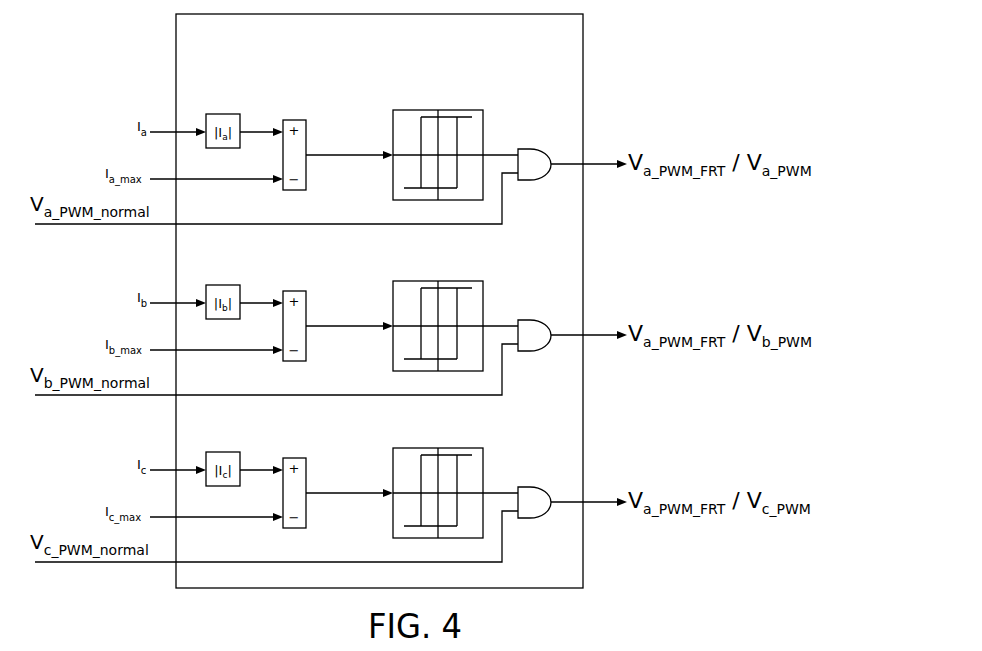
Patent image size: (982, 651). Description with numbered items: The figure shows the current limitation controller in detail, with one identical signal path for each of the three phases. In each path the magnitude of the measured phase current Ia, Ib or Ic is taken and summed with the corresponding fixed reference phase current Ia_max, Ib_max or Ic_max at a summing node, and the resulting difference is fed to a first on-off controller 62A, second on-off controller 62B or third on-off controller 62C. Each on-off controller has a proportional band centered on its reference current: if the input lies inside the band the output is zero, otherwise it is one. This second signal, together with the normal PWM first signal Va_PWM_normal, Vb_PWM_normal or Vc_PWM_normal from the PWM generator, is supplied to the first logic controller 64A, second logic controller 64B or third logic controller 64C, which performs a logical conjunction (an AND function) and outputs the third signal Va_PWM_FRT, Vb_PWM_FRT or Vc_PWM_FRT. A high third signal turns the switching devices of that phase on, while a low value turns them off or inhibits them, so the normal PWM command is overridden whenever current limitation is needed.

The first on-off controller 62A is at (393, 125).
The second on-off controller 62B is at (419, 326).
The third on-off controller 62C is at (419, 493).
The first logic controller 64A is at (527, 149).
The second logic controller 64B is at (531, 310).
The third logic controller 64C is at (531, 477).